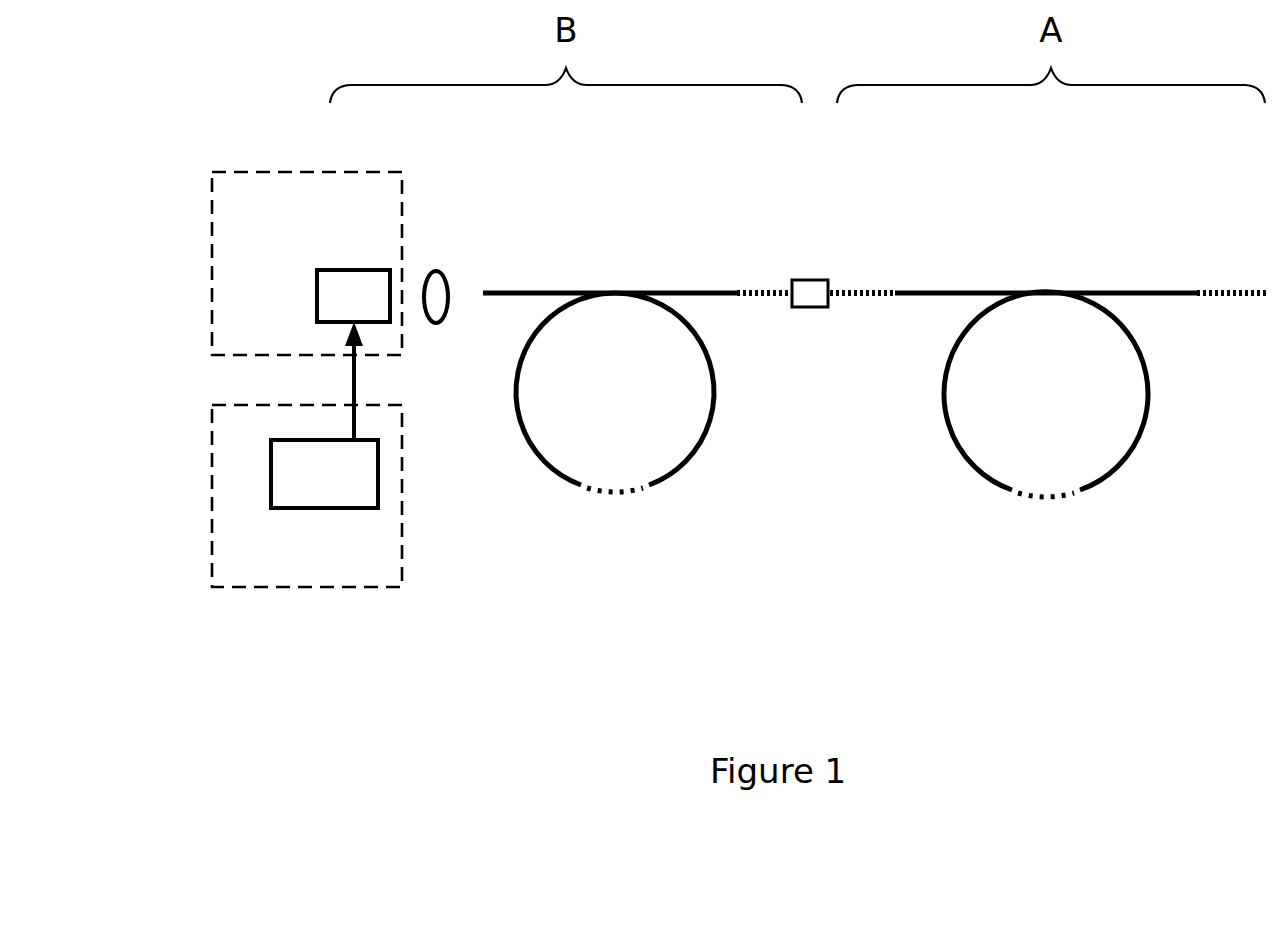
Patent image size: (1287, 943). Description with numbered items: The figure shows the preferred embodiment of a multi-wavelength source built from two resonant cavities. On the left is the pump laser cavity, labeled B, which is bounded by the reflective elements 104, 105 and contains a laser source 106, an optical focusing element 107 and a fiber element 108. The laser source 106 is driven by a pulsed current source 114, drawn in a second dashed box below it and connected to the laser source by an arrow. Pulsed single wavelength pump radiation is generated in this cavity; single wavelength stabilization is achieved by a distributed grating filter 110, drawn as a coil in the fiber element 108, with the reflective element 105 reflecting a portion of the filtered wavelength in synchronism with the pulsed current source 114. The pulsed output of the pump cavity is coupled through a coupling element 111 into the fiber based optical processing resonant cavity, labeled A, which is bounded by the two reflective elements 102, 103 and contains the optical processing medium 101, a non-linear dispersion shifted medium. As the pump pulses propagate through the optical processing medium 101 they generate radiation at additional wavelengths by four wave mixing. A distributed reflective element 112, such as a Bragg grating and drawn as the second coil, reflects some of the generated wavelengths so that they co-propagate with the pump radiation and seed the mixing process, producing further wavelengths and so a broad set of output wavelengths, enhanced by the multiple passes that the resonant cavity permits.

The optical processing medium 101 is at (961, 284).
The reflective element 102 is at (864, 284).
The reflective element 103 is at (1230, 284).
The reflective element 104 is at (308, 293).
The reflective element 105 is at (753, 282).
The laser source 106 is at (239, 158).
The optical focusing element 107 is at (438, 260).
The fiber element 108 is at (533, 282).
The distributed grating filter 110 is at (633, 507).
The coupling element 111 is at (810, 318).
The distributed reflective element 112 is at (1069, 523).
The pulsed current source 114 is at (335, 605).